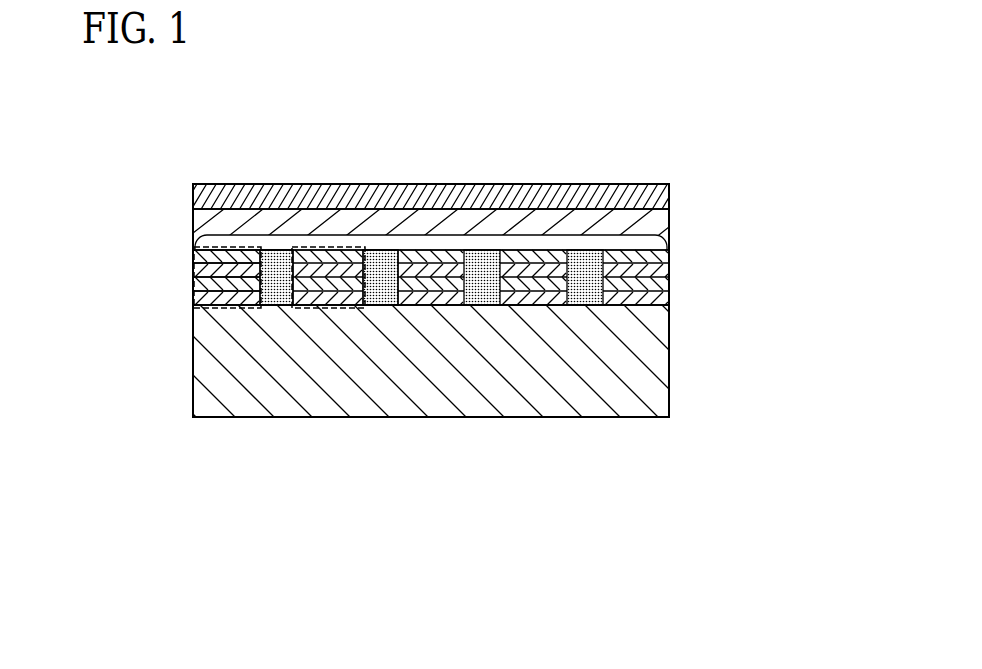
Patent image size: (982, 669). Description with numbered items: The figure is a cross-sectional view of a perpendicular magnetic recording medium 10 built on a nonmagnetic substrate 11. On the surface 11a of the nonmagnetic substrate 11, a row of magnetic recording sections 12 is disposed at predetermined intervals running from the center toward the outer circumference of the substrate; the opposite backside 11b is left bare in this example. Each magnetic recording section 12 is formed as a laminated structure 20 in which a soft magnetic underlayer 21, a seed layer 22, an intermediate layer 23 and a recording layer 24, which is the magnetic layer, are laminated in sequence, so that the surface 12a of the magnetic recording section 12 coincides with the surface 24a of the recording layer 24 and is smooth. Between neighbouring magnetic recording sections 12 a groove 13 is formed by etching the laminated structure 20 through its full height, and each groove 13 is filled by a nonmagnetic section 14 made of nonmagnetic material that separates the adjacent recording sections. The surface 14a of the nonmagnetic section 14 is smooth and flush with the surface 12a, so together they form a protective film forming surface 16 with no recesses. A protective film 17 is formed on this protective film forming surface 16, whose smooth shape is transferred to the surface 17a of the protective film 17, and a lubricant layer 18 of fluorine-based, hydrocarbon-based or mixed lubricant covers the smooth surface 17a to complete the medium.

The magnetic recording medium 10 is at (182, 124).
The nonmagnetic substrate 11 is at (662, 362).
The surface of nonmagnetic substrate 11a is at (657, 307).
The backside of nonmagnetic substrate 11b is at (647, 418).
The magnetic recording section 12 is at (244, 309).
The surface of magnetic recording section 12a is at (208, 249).
The groove 13 is at (264, 284).
The nonmagnetic section 14 is at (284, 292).
The surface of nonmagnetic section 14a is at (370, 250).
The protective film forming surface 16 is at (433, 235).
The protective film 17 is at (657, 241).
The surface of protective film 17a is at (661, 205).
The lubricant layer 18 is at (625, 190).
The laminated structure 20 is at (105, 225).
The soft magnetic underlayer 21 is at (197, 297).
The seed layer 22 is at (197, 285).
The intermediate layer 23 is at (198, 270).
The recording layer 24 is at (199, 254).
The surface of recording layer 24a is at (224, 376).